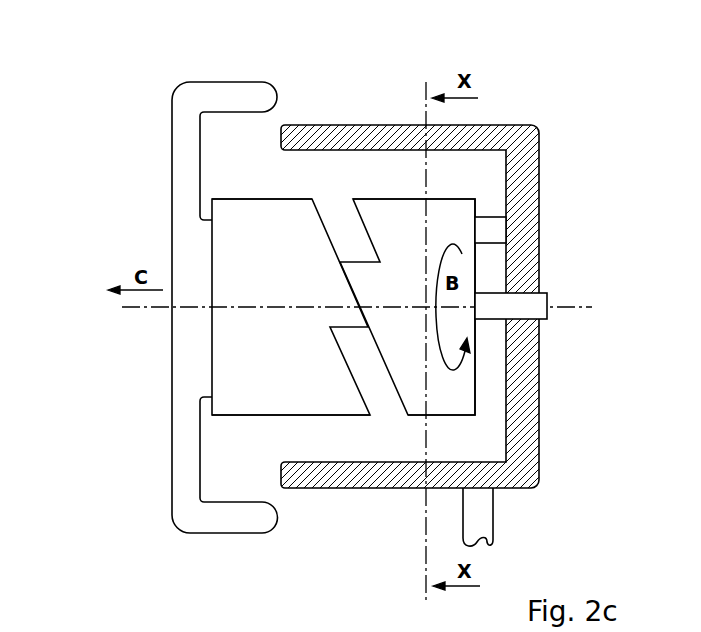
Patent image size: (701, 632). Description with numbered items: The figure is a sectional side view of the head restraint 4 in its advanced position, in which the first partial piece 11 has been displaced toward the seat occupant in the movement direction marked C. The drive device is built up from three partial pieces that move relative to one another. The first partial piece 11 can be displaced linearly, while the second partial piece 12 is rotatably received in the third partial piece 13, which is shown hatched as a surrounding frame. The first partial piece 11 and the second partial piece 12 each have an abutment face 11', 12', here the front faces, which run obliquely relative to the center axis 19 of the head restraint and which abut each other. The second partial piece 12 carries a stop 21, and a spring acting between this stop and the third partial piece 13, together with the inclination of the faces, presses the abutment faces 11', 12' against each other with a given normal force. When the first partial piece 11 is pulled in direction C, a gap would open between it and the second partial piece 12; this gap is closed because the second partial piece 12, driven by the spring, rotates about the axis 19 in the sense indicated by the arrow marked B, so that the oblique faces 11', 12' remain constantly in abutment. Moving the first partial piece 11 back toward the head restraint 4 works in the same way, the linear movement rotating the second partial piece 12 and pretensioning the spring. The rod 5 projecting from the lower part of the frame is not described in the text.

The head restraint 4 is at (140, 166).
The first partial piece 11 is at (185, 307).
The abutment face 11' is at (291, 236).
The second partial piece 12 is at (408, 317).
The abutment face 12' is at (407, 236).
The third partial piece 13 is at (515, 141).
The stop 21 is at (490, 228).
The center axis 19 is at (562, 308).
The rod 5 is at (478, 522).